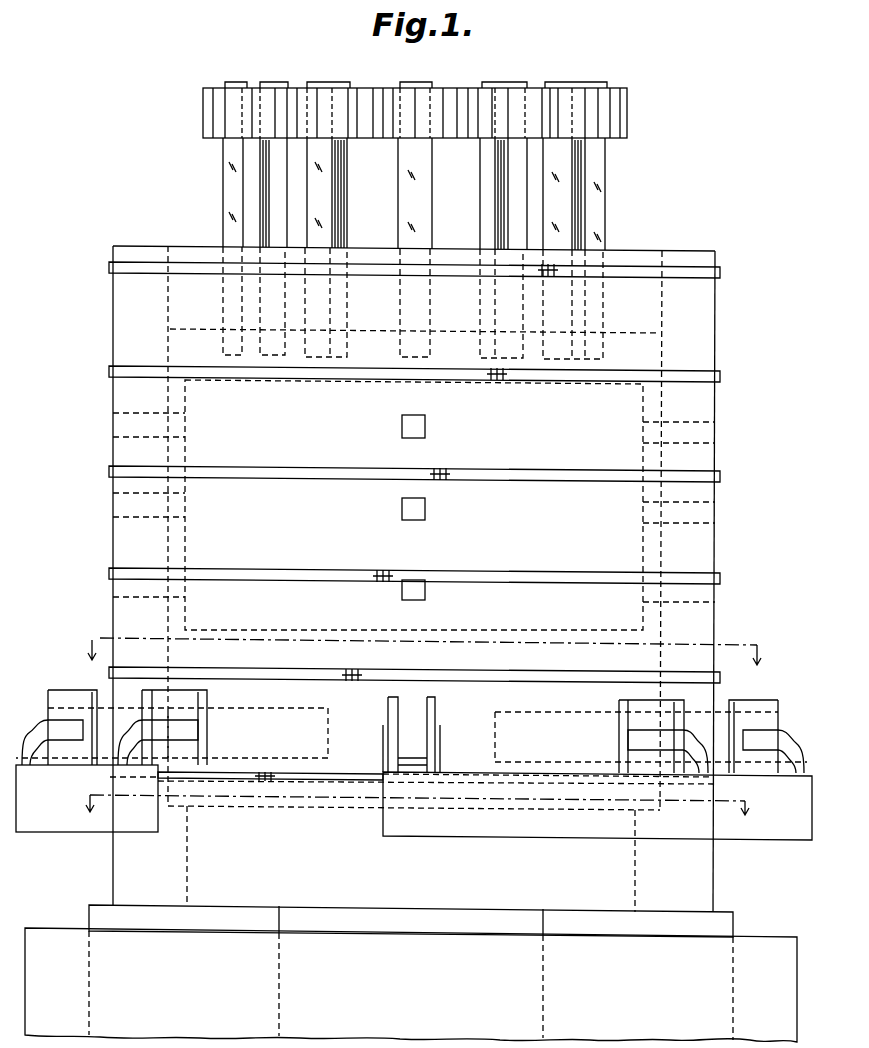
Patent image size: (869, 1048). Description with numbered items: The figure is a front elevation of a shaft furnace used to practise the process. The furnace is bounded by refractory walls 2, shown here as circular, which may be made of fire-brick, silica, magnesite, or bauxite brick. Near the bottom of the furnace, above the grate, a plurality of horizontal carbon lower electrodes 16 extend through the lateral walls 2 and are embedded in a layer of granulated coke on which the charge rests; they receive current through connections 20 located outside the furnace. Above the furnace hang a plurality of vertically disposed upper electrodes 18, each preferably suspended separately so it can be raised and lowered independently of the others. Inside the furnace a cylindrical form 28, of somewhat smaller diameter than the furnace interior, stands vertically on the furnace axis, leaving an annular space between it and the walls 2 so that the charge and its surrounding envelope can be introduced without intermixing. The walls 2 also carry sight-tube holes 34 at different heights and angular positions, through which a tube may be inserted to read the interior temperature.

The walls 2 is at (700, 334).
The lower electrodes 16 is at (106, 712).
The upper electrodes 18 is at (233, 190).
The connections 20 is at (82, 822).
The cylindrical form 28 is at (645, 548).
The sight-tube holes 34 is at (130, 412).